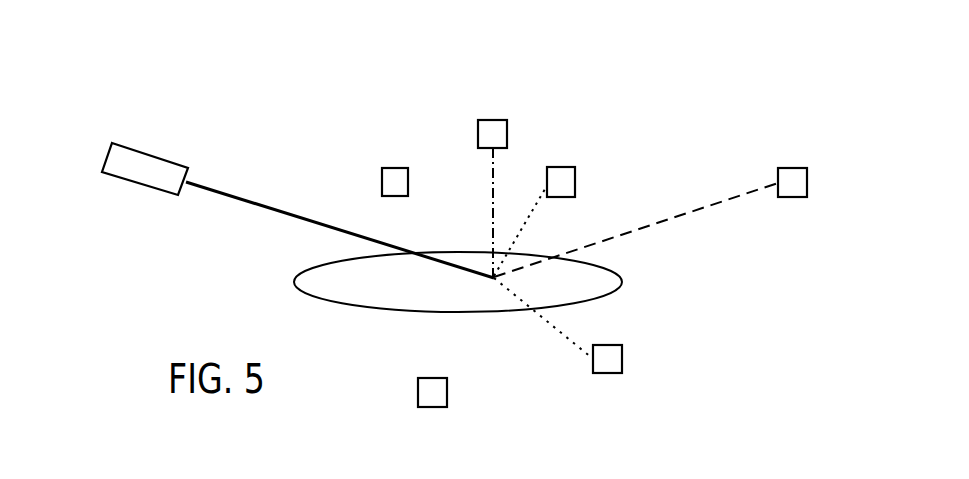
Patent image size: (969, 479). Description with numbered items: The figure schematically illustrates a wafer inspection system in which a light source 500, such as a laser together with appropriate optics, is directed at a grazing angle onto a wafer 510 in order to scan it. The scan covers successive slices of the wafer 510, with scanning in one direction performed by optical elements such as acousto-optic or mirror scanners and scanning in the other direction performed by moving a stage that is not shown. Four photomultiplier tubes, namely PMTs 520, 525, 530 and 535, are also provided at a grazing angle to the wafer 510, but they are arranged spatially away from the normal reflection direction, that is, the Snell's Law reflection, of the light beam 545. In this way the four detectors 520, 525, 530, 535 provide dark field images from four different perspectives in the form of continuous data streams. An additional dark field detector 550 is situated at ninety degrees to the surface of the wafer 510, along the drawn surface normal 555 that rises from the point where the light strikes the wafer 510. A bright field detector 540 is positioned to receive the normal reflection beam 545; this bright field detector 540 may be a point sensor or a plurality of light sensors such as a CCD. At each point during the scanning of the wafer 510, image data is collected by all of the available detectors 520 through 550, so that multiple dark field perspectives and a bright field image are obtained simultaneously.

The light beam source 500 is at (131, 152).
The wafer 510 is at (604, 285).
The PMT 520 is at (389, 168).
The PMT 525 is at (576, 168).
The PMT 530 is at (418, 393).
The PMT 535 is at (622, 358).
The bright field detector 540 is at (795, 168).
The normal reflection beam 545 is at (695, 208).
The dark field detector 550 is at (488, 119).
The surface normal 555 is at (492, 187).